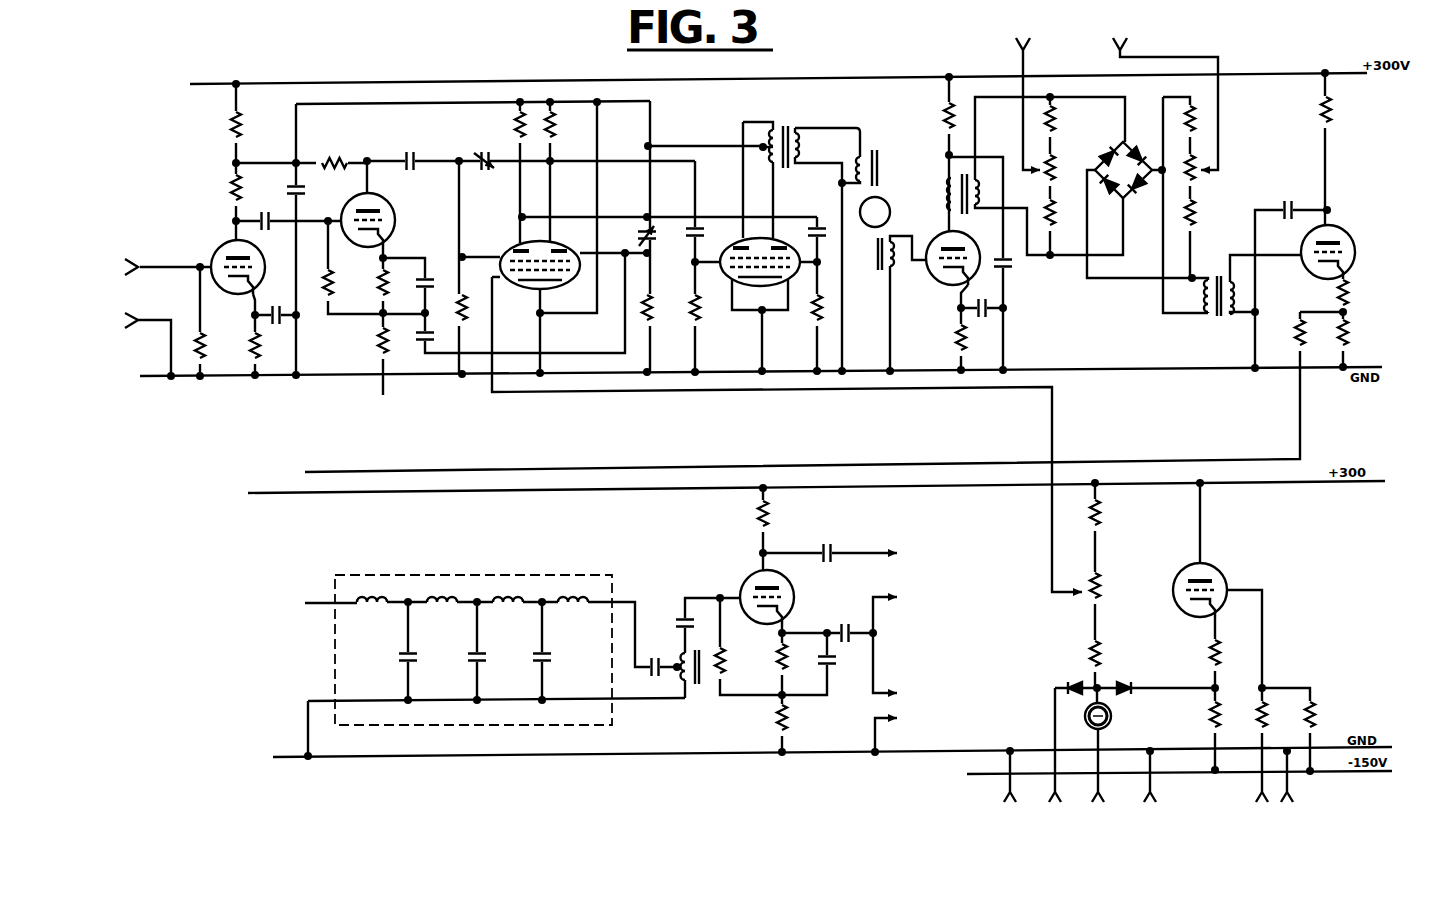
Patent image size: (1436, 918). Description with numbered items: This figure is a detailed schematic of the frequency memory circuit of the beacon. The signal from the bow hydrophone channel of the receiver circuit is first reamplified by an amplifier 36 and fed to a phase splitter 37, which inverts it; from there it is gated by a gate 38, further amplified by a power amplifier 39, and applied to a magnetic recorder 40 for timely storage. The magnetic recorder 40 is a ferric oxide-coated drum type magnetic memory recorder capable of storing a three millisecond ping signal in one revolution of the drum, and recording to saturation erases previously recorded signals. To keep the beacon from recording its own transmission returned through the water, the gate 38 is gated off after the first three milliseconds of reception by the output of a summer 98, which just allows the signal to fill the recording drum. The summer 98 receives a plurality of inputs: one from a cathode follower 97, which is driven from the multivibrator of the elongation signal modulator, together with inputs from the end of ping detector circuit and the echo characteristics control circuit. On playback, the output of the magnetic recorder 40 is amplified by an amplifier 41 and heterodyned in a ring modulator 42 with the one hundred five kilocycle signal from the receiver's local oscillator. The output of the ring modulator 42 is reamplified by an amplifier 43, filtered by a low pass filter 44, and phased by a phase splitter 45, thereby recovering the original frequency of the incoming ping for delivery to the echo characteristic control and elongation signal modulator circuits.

The amplifier 36 is at (188, 116).
The phase splitter 37 is at (377, 82).
The gate 38 is at (531, 82).
The power amplifier 39 is at (730, 134).
The magnetic recorder 40 is at (886, 118).
The amplifier 41 is at (985, 99).
The ring modulator 42 is at (1135, 124).
The amplifier 43 is at (1308, 69).
The low pass filter 44 is at (444, 573).
The phase splitter 45 is at (708, 571).
The cathode follower 97 is at (1264, 566).
The summer 98 is at (1042, 577).